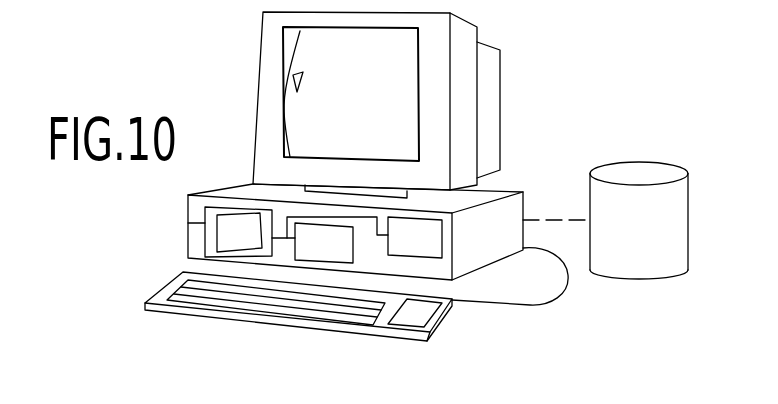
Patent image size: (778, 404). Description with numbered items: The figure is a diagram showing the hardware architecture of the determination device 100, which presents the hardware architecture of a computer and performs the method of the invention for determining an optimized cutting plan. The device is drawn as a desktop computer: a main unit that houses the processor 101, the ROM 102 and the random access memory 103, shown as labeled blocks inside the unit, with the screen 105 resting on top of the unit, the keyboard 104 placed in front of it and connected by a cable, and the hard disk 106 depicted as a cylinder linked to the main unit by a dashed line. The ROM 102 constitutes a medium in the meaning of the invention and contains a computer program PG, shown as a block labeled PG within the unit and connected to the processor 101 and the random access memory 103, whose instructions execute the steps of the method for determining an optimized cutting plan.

The determination device 100 is at (594, 72).
The processor 101 is at (415, 237).
The ROM 102 is at (188, 223).
The random access memory 103 is at (324, 243).
The keyboard 104 is at (167, 288).
The screen 105 is at (287, 88).
The hard disk 106 is at (629, 267).